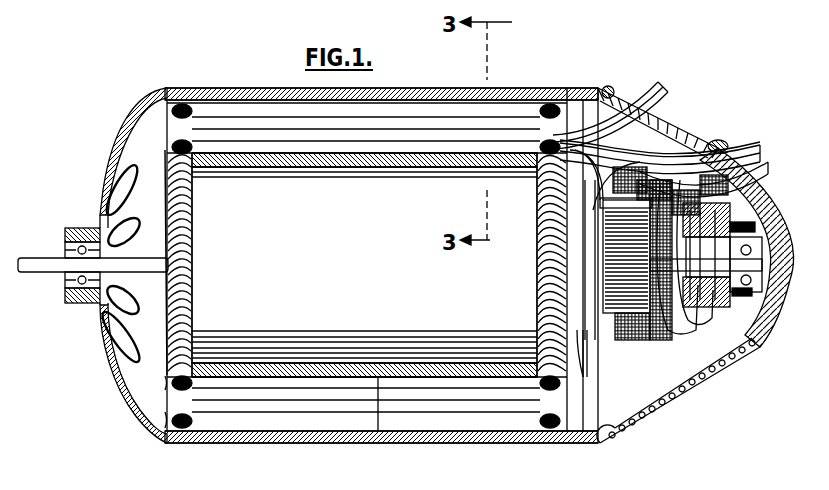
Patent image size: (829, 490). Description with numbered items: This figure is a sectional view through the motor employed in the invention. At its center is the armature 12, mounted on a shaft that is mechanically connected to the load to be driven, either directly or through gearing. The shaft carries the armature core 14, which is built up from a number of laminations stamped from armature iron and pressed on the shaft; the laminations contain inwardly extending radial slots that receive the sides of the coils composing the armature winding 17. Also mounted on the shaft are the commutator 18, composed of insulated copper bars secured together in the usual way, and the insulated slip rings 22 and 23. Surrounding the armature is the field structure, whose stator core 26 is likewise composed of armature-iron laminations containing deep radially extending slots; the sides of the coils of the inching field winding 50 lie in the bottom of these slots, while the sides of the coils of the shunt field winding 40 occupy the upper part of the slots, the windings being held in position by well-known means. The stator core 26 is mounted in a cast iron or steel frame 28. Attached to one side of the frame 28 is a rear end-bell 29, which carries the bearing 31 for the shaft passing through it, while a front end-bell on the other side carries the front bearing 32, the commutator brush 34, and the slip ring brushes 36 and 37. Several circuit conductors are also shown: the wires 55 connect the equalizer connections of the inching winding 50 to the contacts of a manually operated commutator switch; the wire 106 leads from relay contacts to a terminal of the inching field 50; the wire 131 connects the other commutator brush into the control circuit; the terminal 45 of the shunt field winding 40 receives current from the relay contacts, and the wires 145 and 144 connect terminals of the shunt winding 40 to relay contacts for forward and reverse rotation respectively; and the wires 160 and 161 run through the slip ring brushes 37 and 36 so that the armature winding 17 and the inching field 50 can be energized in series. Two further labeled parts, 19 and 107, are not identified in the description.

The armature 12 is at (352, 246).
The armature core 14 is at (196, 245).
The armature winding 17 is at (167, 329).
The commutator 18 is at (622, 340).
The shaft 19 is at (44, 260).
The slip ring 22 is at (646, 350).
The slip ring 23 is at (758, 340).
The stator core 26 is at (178, 152).
The frame 28 is at (418, 444).
The rear end-bell 29 is at (137, 430).
The bearing 31 is at (67, 284).
The front bearing 32 is at (789, 268).
The commutator brush 34 is at (608, 201).
The slip ring brush 36 is at (720, 228).
The slip ring brush 37 is at (754, 349).
The shunt field winding 40 is at (165, 380).
The terminal 45 is at (584, 366).
The inching field winding 50 is at (165, 418).
The wires 55 is at (656, 84).
The wire 106 is at (586, 360).
The insulating sleeve 107 is at (586, 347).
The wire 131 is at (744, 152).
The wire 144 is at (727, 149).
The wire 145 is at (714, 141).
The wire 160 is at (768, 165).
The wire 161 is at (762, 152).